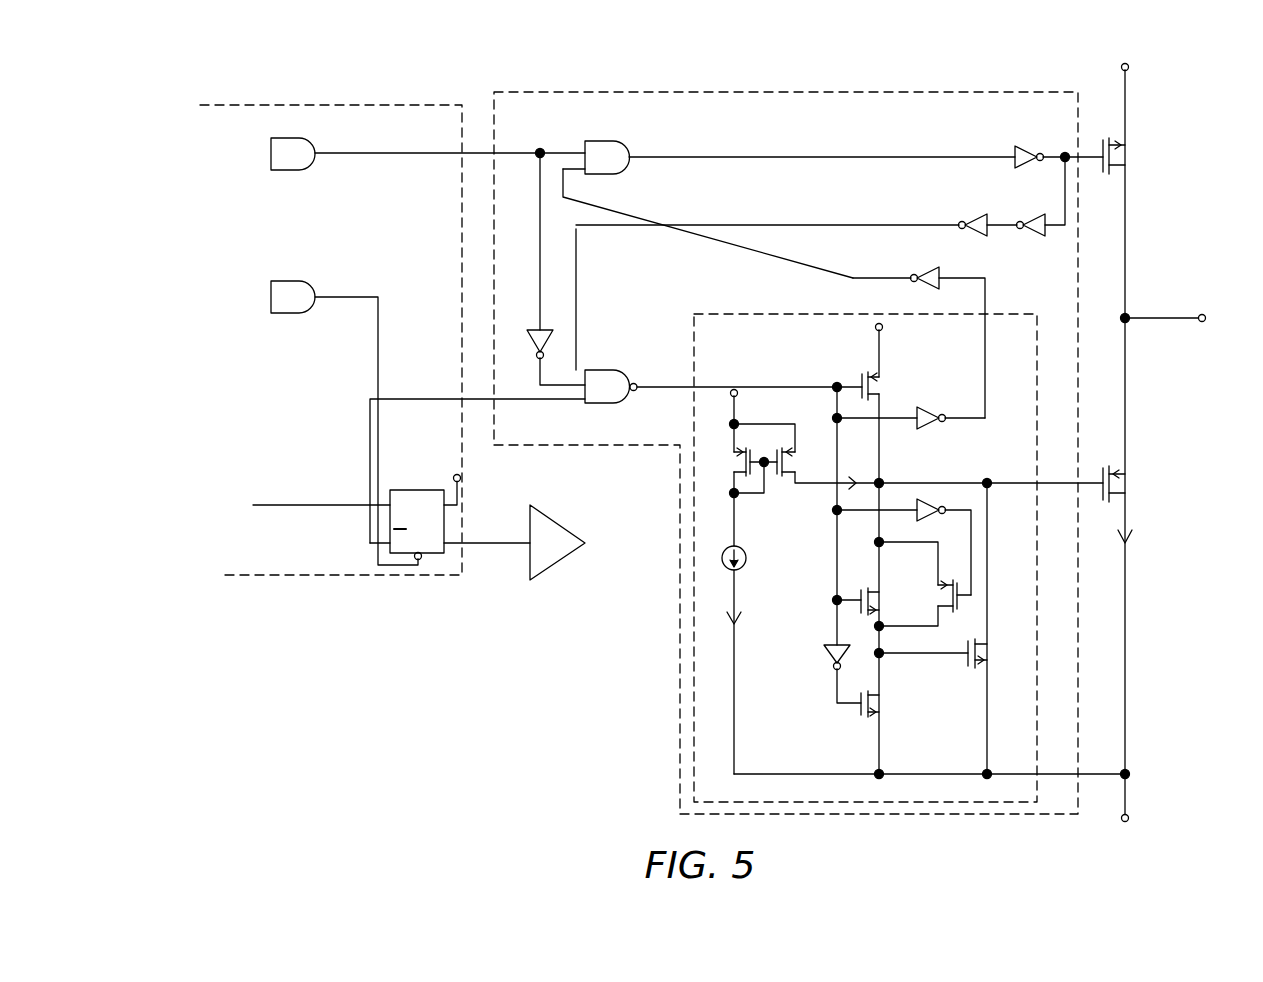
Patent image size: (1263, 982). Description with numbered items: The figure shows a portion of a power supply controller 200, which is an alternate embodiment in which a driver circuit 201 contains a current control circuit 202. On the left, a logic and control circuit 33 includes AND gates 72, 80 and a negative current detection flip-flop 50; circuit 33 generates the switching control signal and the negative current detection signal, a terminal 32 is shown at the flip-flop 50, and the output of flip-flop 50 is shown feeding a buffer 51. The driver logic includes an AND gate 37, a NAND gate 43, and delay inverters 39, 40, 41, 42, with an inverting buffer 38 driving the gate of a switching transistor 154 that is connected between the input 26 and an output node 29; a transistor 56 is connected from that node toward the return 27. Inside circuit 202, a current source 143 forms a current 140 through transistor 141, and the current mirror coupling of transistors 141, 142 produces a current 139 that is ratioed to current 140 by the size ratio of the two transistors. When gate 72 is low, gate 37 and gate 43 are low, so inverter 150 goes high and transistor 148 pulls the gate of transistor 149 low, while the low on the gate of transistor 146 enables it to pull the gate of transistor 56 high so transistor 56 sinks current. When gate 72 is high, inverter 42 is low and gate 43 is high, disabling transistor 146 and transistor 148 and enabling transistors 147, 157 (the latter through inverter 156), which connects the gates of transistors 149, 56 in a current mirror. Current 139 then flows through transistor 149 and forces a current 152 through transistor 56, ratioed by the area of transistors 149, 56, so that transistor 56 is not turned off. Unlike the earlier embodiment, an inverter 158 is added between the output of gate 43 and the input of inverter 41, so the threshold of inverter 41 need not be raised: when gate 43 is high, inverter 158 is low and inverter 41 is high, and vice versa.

The input 26 is at (1129, 64).
The return 27 is at (1120, 818).
The output terminal 29 is at (1205, 313).
The input terminal 32 is at (453, 476).
The logic and control circuit 33 is at (280, 580).
The AND gate 37 is at (608, 141).
The inverting buffer 38 is at (1026, 145).
The delay inverter 39 is at (970, 214).
The delay inverter 40 is at (1026, 213).
The delay inverter 41 is at (925, 267).
The delay inverter 42 is at (527, 344).
The NAND gate 43 is at (608, 370).
The negative current detection (NCD) flip-flop 50 is at (452, 548).
The buffer 51 is at (566, 567).
The transistor 56 is at (1128, 476).
The AND gate 72 is at (285, 171).
The AND gate 80 is at (285, 314).
The current 139 is at (852, 487).
The current 140 is at (739, 622).
The transistor 141 is at (738, 462).
The transistor 142 is at (790, 465).
The current source 143 is at (747, 560).
The transistor 146 is at (880, 384).
The transistor 147 is at (880, 598).
The transistor 148 is at (880, 702).
The transistor 149 is at (984, 651).
The inverter 150 is at (833, 660).
The current 152 is at (1128, 538).
The switching transistor 154 is at (1128, 162).
The inverter 156 is at (932, 502).
The transistor 157 is at (943, 590).
The inverter 158 is at (932, 410).
The power supply controller 200 is at (398, 806).
The driver circuit 201 is at (679, 724).
The current control circuit 202 is at (735, 318).